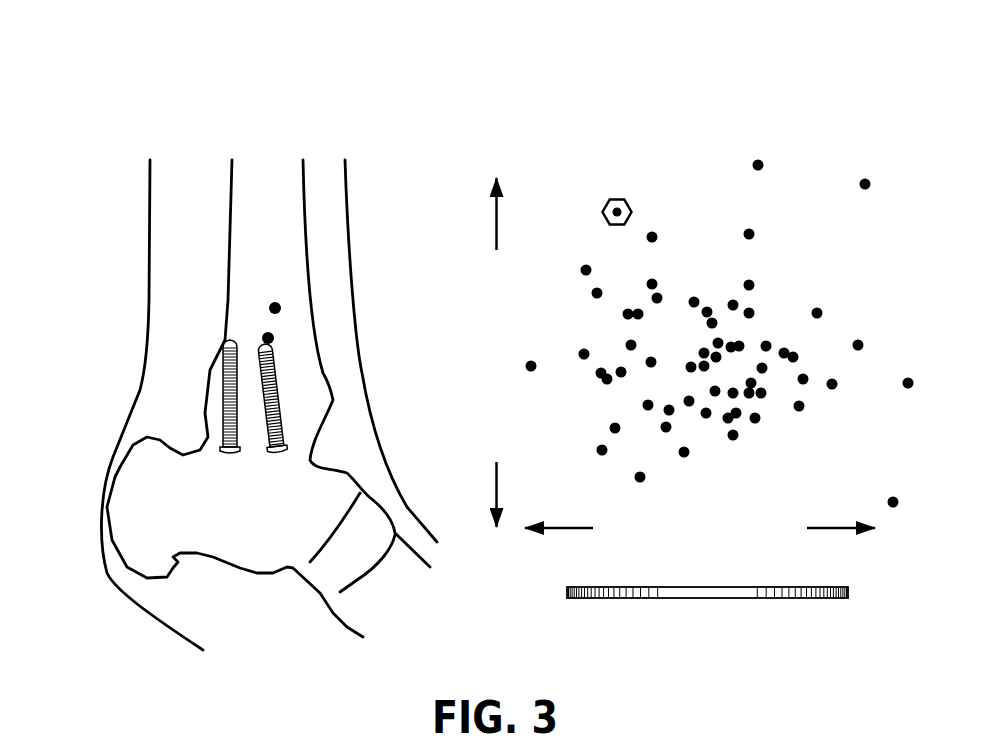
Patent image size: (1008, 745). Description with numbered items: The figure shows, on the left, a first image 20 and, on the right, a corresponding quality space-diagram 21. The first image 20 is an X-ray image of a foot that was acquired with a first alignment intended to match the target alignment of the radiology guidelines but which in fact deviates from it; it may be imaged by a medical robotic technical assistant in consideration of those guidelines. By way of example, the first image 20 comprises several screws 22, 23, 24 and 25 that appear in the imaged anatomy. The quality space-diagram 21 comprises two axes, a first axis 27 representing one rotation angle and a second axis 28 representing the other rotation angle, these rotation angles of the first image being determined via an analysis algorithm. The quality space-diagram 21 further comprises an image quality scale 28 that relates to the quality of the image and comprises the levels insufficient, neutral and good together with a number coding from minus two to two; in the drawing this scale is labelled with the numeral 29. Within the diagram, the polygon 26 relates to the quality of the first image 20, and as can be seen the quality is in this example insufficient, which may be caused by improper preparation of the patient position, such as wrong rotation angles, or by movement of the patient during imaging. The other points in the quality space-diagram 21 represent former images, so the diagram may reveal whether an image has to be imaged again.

The first image 20 is at (202, 128).
The quality space-diagram 21 is at (683, 130).
The screw 22 is at (222, 392).
The screw 23 is at (250, 408).
The screw 24 is at (276, 299).
The screw 25 is at (277, 337).
The polygon 26 is at (618, 193).
The first axis 27 is at (504, 228).
The second axis 28 is at (832, 541).
The image quality scale 29 is at (855, 653).